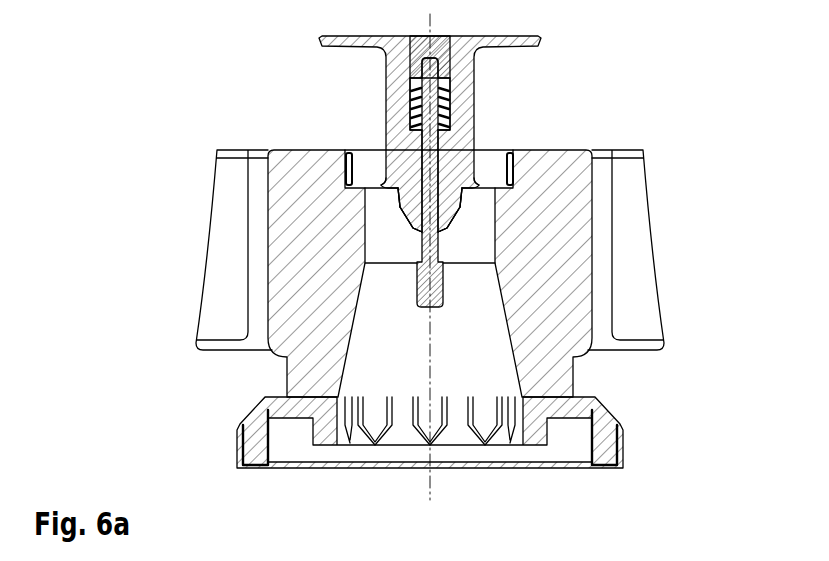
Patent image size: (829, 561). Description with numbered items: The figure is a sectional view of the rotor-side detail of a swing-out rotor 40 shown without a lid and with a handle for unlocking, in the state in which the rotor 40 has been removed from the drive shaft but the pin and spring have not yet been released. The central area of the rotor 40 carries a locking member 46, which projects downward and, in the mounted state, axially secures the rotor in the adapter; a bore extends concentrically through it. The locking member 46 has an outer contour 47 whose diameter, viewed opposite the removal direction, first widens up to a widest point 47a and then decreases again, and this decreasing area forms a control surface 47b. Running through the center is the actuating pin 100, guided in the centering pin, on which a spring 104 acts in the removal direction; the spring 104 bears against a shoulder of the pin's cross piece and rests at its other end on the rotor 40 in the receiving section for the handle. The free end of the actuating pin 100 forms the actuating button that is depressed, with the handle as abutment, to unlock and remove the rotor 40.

The rotor 40 is at (285, 173).
The locking member 46 is at (415, 222).
The outer contour 47 is at (385, 205).
The widest point 47a is at (462, 212).
The control surface 47b is at (452, 225).
The actuating pin 100 is at (445, 150).
The spring 104 is at (388, 110).